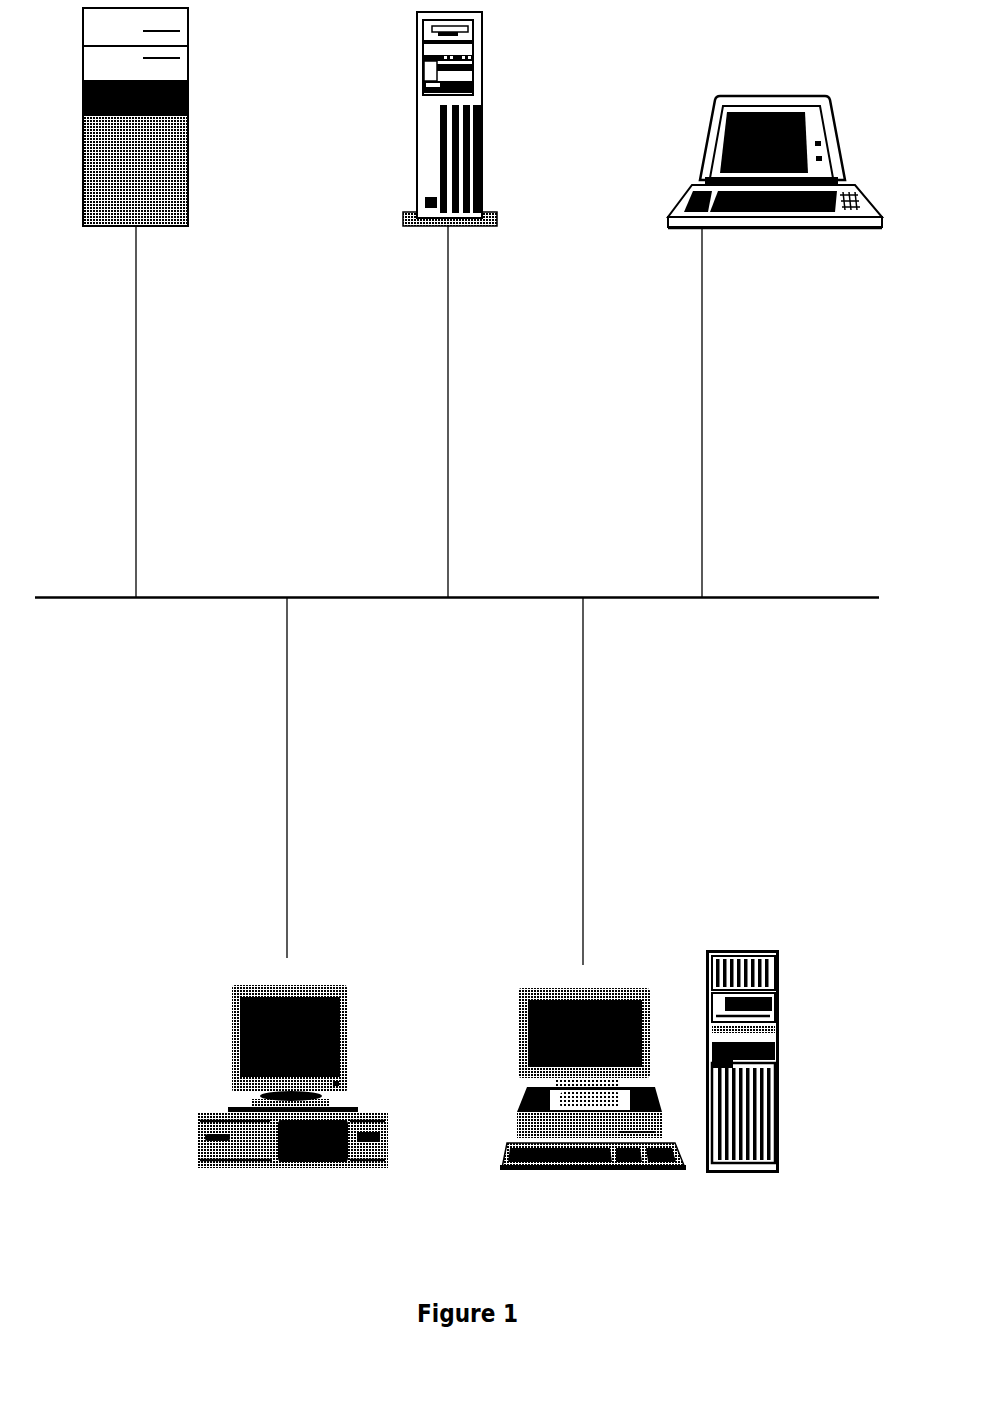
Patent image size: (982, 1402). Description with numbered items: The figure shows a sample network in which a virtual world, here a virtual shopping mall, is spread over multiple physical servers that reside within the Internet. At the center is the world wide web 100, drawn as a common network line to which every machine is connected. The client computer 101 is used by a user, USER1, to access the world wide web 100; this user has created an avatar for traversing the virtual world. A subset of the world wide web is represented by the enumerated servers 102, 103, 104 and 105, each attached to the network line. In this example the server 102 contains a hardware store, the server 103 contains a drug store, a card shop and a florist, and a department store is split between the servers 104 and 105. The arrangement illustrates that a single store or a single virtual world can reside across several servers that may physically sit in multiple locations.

The world wide web 100 is at (457, 577).
The client computer 101 is at (166, 302).
The server 102 is at (479, 304).
The server 103 is at (787, 346).
The server 104 is at (305, 882).
The server 105 is at (669, 884).